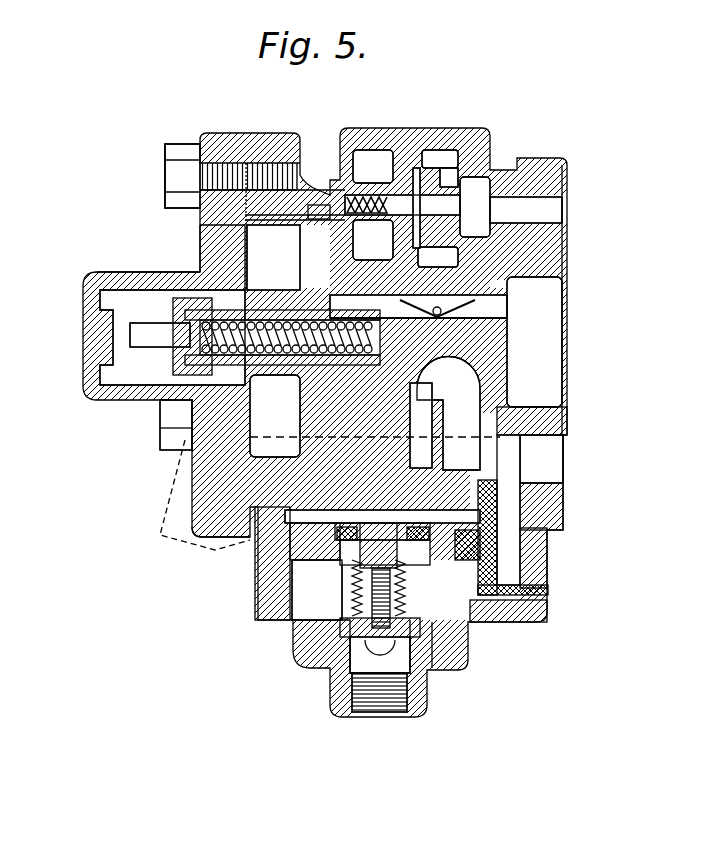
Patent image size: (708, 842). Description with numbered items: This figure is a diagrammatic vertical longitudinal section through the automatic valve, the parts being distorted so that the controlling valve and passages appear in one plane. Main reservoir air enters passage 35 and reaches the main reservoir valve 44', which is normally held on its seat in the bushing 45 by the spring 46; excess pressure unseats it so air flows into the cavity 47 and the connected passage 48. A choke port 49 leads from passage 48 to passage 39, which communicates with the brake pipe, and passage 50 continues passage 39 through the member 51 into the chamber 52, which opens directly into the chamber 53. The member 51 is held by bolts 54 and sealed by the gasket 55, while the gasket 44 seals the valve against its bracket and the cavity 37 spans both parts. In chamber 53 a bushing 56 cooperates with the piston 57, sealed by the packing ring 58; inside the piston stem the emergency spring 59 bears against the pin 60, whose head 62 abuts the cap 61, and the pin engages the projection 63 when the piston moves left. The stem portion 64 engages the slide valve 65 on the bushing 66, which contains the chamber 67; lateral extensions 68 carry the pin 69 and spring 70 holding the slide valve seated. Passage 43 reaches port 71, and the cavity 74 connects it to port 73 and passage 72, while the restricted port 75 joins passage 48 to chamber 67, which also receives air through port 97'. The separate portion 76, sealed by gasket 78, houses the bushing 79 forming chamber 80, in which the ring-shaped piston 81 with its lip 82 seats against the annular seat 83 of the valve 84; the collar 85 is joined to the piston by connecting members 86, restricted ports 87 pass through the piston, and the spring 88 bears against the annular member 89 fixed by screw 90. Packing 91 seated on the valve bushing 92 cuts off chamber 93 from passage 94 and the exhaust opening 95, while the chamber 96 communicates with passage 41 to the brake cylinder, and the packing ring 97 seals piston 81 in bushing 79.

The passage 35 is at (547, 207).
The cavity 37 is at (555, 335).
The passage 39 is at (257, 540).
The passage 41 is at (540, 463).
The passage 43 is at (465, 462).
The gasket 44 is at (548, 421).
The main reservoir valve 44' is at (434, 180).
The bushing 45 is at (400, 155).
The spring 46 is at (362, 230).
The cavity 47 is at (375, 157).
The passage 48 is at (510, 292).
The choke port 49 is at (428, 440).
The passage 50 is at (183, 523).
The member 51 is at (208, 237).
The chamber 52 is at (200, 390).
The chamber 53 is at (267, 273).
The bolts 54 is at (178, 178).
The gasket 55 is at (242, 140).
The bushing 56 is at (198, 218).
The piston 57 is at (207, 542).
The packing ring 58 is at (317, 223).
The emergency spring 59 is at (235, 340).
The pin 60 is at (135, 342).
The cap 61 is at (120, 276).
The head 62 is at (190, 343).
The projection 63 is at (83, 353).
The portion 64 is at (497, 333).
The slide valve 65 is at (512, 367).
The bushing 66 is at (470, 268).
The chamber 67 is at (565, 305).
The lateral extensions 68 is at (495, 258).
The pin 69 is at (490, 257).
The spring 70 is at (507, 350).
The port 71 is at (457, 427).
The passage 72 is at (560, 485).
The port 73 is at (452, 390).
The cavity 74 is at (500, 365).
The restricted port 75 is at (292, 395).
The portion 76 is at (310, 648).
The gasket 78 is at (283, 580).
The bushing 79 is at (262, 578).
The chamber 80 is at (320, 567).
The piston 81 is at (295, 560).
The projecting lip 82 is at (470, 540).
The annular seat 83 is at (352, 555).
The valve 84 is at (350, 640).
The collar 85 is at (392, 660).
The connecting members 86 is at (350, 577).
The restricted ports 87 is at (307, 640).
The spring 88 is at (342, 653).
The annular member 89 is at (368, 700).
The screw 90 is at (380, 710).
The packing 91 is at (365, 663).
The valve bushing 92 is at (375, 710).
The chamber 93 is at (427, 640).
The passage 94 is at (385, 705).
The exhaust opening 95 is at (378, 705).
The chamber 96 is at (442, 600).
The packing ring 97 is at (530, 537).
The port 97' is at (295, 194).